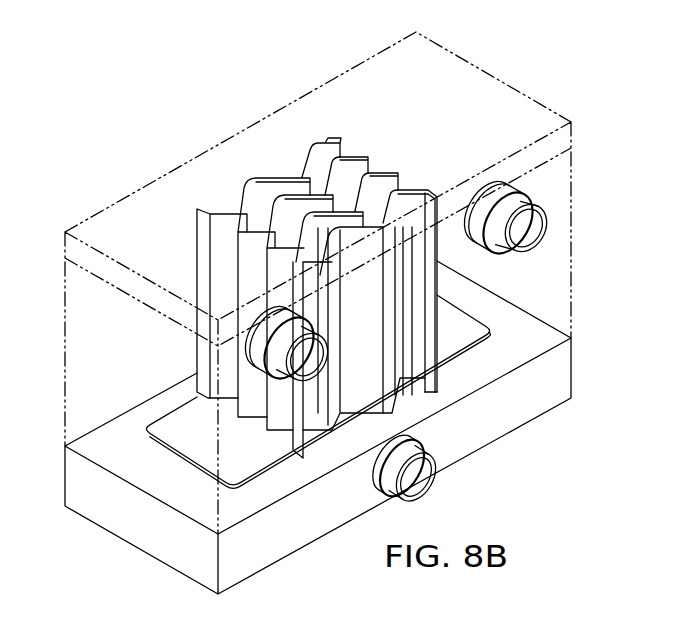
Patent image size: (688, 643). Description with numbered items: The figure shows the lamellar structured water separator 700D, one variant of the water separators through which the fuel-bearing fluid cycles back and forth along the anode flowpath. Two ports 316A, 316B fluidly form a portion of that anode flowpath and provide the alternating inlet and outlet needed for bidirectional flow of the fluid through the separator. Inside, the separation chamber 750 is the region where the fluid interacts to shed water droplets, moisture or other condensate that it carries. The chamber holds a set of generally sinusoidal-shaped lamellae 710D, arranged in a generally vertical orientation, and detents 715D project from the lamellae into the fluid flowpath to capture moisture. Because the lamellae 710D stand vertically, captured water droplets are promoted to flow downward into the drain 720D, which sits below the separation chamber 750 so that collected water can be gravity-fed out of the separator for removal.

The lamellar structured water separator 700D is at (192, 134).
The separation chamber 750 is at (65, 330).
The lamellae 710D is at (282, 176).
The detents 715D is at (340, 196).
The port 316A is at (547, 217).
The port 316B is at (328, 342).
The drain 720D is at (424, 480).